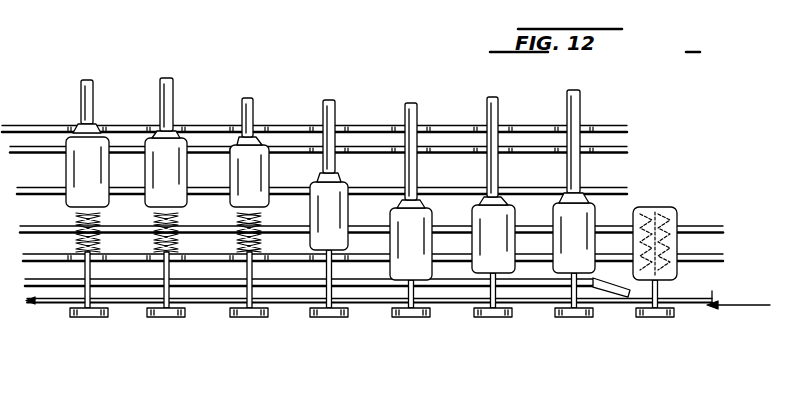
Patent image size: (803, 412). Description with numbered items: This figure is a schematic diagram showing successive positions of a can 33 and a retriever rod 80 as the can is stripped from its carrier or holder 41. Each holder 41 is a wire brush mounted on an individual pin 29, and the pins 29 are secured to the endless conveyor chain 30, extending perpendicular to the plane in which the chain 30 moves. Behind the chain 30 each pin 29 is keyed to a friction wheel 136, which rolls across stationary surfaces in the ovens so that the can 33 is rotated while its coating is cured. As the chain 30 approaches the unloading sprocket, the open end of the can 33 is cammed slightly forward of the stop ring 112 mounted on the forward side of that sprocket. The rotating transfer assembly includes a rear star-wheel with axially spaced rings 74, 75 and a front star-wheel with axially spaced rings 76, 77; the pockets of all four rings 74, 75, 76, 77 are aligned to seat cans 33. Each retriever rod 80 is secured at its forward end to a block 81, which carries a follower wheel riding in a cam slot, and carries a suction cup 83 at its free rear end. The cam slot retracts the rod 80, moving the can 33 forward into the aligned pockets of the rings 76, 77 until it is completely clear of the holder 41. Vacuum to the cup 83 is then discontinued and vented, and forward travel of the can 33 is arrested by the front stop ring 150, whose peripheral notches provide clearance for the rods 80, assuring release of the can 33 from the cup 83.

The retriever rod 80 is at (80, 99).
The block 81 is at (72, 127).
The ring of front star-wheel 77 is at (207, 147).
The ring of front star-wheel 76 is at (218, 178).
The ring of rear star-wheel 75 is at (218, 218).
The front stop ring 150 is at (360, 136).
The ring of rear star-wheel 74 is at (207, 266).
The stop ring 112 is at (360, 279).
The pin 29 is at (243, 288).
The endless conveyor chain 30 is at (132, 306).
The friction wheel 136 is at (78, 318).
The can 33 is at (598, 213).
The suction cup 83 is at (585, 193).
The holder 41 is at (677, 213).